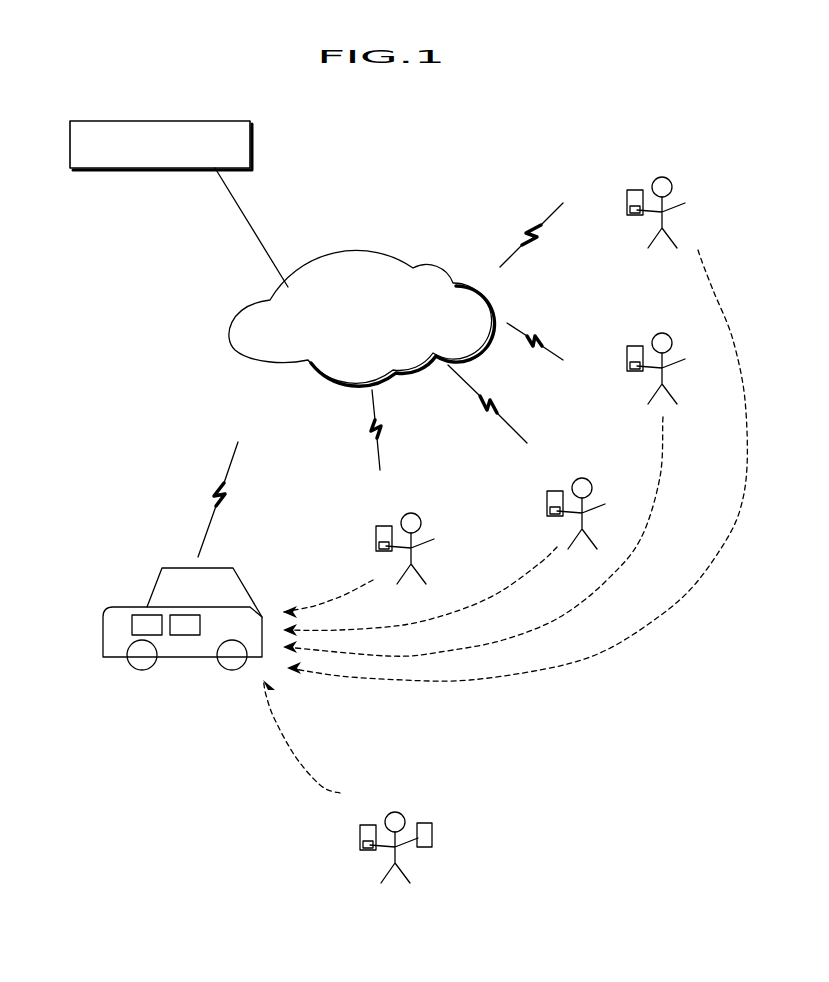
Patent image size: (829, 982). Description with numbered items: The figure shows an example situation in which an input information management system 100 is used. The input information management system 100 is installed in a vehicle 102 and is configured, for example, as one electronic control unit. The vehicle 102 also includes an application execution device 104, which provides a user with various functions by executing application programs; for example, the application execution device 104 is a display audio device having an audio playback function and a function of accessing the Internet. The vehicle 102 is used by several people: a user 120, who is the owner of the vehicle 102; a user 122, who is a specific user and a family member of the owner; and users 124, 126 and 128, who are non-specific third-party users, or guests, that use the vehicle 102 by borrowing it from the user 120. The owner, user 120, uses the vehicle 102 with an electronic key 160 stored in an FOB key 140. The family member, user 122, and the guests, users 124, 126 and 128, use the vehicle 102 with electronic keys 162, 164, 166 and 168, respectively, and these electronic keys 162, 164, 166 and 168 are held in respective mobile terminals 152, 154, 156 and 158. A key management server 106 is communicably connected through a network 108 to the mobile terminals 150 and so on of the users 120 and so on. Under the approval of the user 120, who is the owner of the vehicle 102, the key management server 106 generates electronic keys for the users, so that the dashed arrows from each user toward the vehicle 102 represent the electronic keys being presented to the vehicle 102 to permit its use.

The input information management system 100 is at (140, 622).
The vehicle 102 is at (115, 622).
The application execution device 104 is at (183, 632).
The key management server 106 is at (98, 121).
The network 108 is at (315, 283).
The user 120 is at (402, 815).
The user 122 is at (418, 516).
The user 124 is at (589, 481).
The user 126 is at (669, 336).
The user 128 is at (669, 180).
The FOB key 140 is at (369, 825).
The mobile terminal 150 is at (432, 834).
The mobile terminal 152 is at (385, 526).
The mobile terminal 154 is at (556, 491).
The mobile terminal 156 is at (636, 346).
The mobile terminal 158 is at (636, 190).
The electronic key 160 is at (360, 837).
The electronic key 162 is at (376, 538).
The electronic key 164 is at (547, 503).
The electronic key 166 is at (627, 358).
The electronic key 168 is at (627, 202).